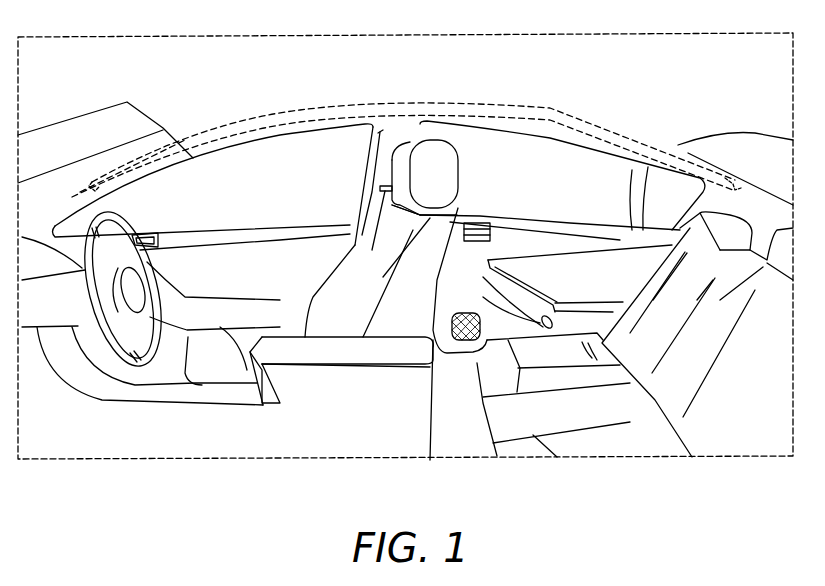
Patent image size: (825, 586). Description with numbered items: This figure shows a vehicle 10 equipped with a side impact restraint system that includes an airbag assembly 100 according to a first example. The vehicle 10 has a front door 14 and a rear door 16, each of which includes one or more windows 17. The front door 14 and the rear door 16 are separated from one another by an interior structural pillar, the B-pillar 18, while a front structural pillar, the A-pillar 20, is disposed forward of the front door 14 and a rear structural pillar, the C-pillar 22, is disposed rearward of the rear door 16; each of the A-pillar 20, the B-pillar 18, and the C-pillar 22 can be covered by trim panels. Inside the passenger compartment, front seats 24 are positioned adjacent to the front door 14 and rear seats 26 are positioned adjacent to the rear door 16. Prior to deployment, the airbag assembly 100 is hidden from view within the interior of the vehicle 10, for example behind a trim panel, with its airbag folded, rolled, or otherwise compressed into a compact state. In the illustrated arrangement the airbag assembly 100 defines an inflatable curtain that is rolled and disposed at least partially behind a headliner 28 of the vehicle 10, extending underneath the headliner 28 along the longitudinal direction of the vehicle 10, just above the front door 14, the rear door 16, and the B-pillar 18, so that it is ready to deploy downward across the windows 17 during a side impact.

The vehicle 10 is at (88, 97).
The front door 14 is at (218, 228).
The rear door 16 is at (583, 223).
The windows 17 is at (317, 137).
The B-pillar 18 is at (368, 161).
The A-pillar 20 is at (78, 156).
The C-pillar 22 is at (745, 172).
The front seats 24 is at (330, 280).
The rear seats 26 is at (650, 268).
The headliner 28 is at (497, 135).
The airbag assembly 100 is at (628, 133).